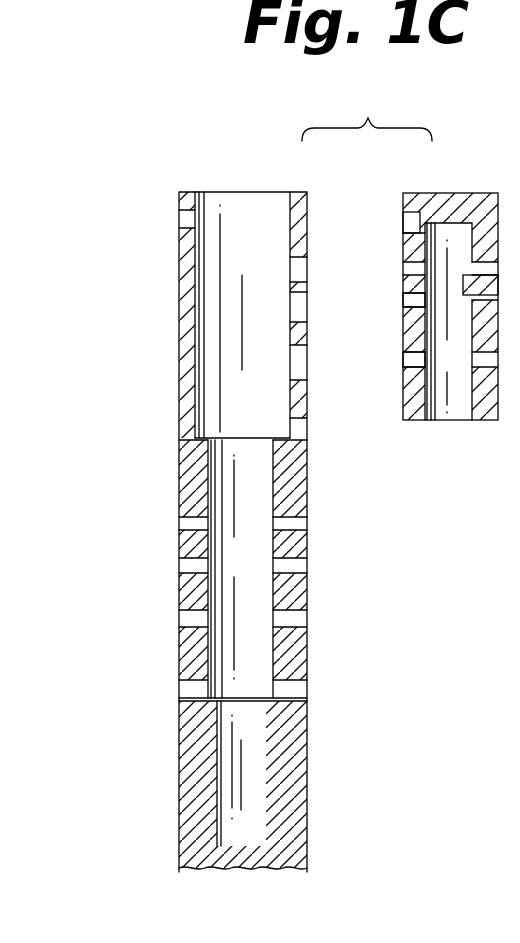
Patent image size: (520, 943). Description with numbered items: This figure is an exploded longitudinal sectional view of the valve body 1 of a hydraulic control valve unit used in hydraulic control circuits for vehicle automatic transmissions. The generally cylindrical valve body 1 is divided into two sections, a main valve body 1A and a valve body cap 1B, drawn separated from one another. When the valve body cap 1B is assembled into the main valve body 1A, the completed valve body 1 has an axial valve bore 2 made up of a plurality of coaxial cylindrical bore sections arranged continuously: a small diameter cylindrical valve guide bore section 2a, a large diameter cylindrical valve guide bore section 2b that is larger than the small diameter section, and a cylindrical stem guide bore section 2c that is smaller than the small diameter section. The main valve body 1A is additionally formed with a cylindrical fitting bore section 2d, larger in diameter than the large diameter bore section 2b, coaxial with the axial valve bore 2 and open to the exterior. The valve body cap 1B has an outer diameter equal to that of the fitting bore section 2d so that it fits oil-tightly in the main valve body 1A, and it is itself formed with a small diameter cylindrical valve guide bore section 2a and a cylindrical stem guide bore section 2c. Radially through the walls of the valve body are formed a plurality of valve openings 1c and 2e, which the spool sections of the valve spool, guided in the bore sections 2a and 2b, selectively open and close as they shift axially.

The valve body 1 is at (367, 116).
The main valve body 1A is at (318, 192).
The valve body cap 1B is at (413, 193).
The valve openings 1c is at (298, 522).
The axial valve bore 2 is at (248, 565).
The small diameter cylindrical valve guide bore section 2a is at (212, 774).
The large diameter cylindrical valve guide bore section 2b is at (207, 598).
The cylindrical stem guide bore section 2c is at (428, 273).
The cylindrical fitting bore section 2d is at (193, 361).
The valve openings 2e is at (410, 300).